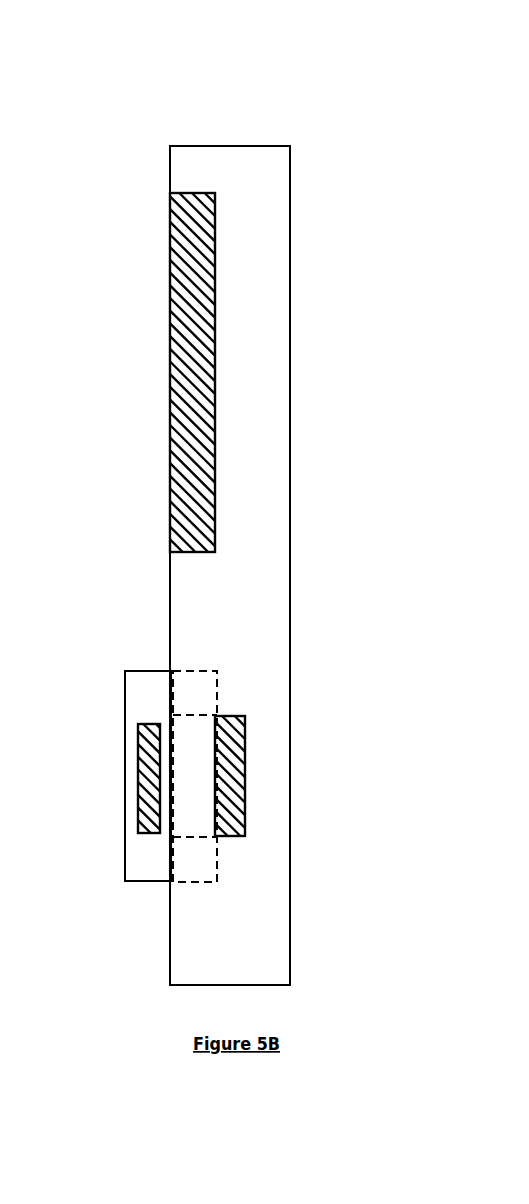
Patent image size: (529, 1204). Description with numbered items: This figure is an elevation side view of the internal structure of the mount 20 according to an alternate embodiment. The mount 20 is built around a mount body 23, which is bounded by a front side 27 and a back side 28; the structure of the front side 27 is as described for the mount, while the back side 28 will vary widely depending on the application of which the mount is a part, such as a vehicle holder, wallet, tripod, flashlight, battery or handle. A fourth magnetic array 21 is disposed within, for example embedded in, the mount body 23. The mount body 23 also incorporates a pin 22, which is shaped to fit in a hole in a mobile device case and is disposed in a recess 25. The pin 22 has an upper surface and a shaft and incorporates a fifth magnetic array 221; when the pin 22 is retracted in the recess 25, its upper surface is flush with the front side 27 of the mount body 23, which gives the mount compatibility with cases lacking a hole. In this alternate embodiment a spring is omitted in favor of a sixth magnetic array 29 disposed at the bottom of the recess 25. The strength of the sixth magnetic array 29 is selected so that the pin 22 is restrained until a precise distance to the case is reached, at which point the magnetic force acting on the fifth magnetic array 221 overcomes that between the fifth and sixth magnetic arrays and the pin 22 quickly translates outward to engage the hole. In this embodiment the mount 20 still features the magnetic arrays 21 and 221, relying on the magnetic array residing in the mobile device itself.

The mount 20 is at (210, 147).
The fourth magnetic array 21 is at (180, 325).
The pin 22 is at (125, 727).
The fifth magnetic array 221 is at (155, 735).
The mount body 23 is at (230, 565).
The recess 25 is at (195, 682).
The front side 27 is at (170, 599).
The back side 28 is at (290, 452).
The sixth magnetic array 29 is at (246, 760).